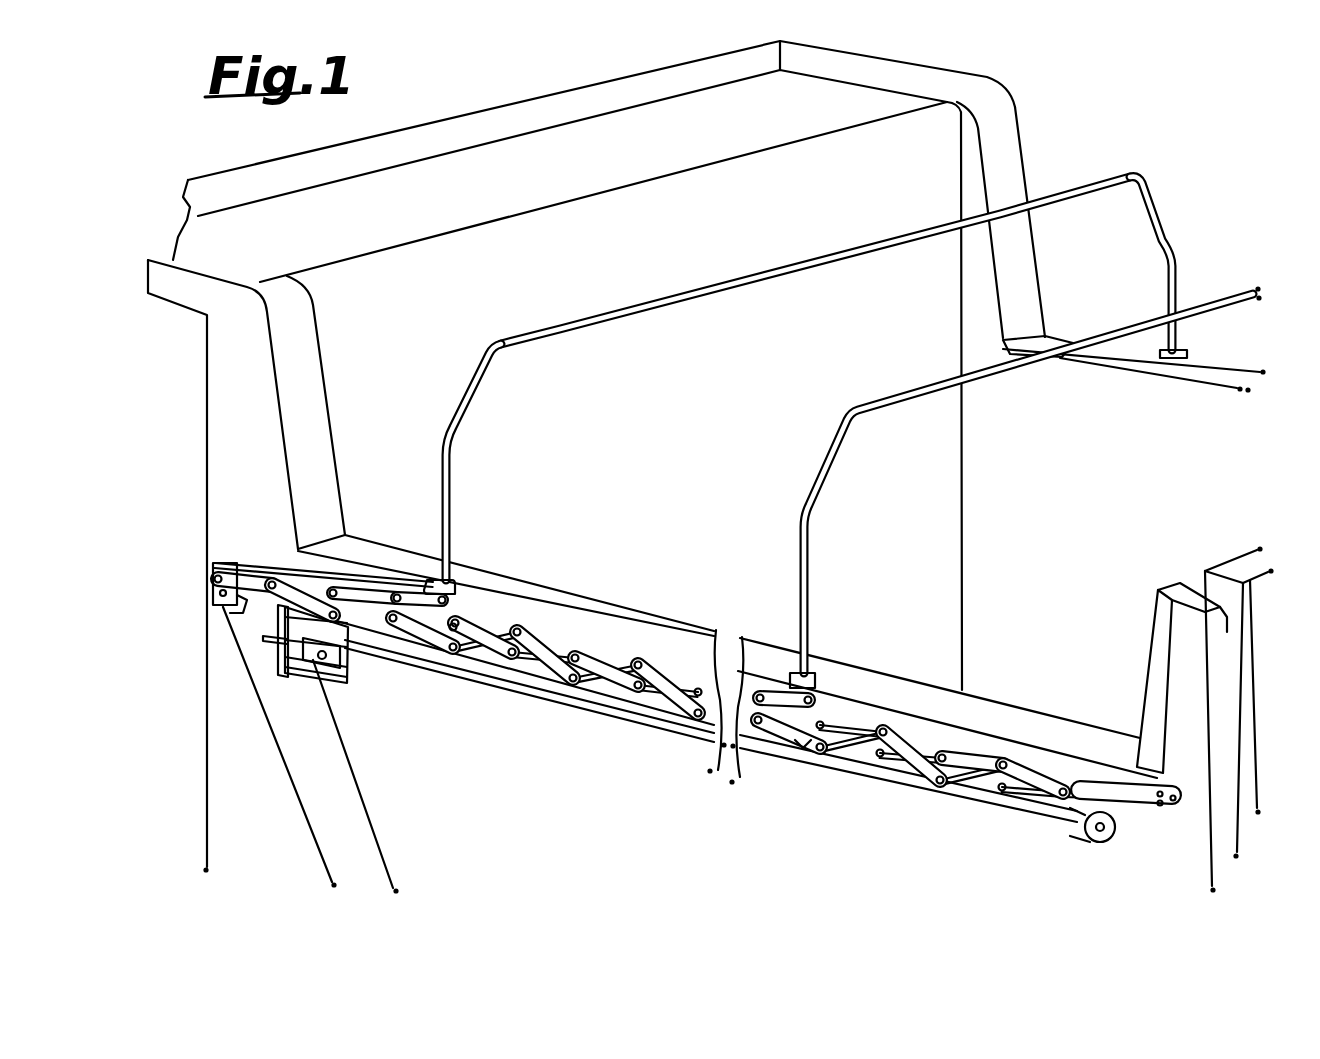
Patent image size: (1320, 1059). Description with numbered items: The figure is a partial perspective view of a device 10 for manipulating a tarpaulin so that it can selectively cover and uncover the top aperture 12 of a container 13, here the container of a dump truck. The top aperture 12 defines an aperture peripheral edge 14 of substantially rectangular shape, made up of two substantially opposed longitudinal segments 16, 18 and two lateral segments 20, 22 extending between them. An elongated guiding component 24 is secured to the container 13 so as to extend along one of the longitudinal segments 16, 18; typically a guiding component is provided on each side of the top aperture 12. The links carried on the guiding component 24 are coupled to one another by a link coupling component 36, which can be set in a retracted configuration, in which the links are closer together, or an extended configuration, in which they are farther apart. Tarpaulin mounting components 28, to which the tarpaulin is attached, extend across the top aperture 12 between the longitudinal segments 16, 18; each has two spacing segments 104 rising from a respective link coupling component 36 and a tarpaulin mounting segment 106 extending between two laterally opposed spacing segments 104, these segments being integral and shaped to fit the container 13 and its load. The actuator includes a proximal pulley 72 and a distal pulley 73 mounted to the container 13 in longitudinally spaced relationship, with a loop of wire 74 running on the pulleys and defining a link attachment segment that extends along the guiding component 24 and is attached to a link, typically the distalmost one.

The device 10 is at (578, 571).
The top aperture 12 is at (722, 442).
The container 13 is at (1143, 418).
The aperture peripheral edge 14 is at (1060, 338).
The longitudinal segment 16 is at (630, 612).
The longitudinal segment 18 is at (1130, 364).
The lateral segment 20 is at (540, 214).
The lateral segment 22 is at (1232, 566).
The guiding component 24 is at (258, 563).
The tarpaulin mounting component 28 is at (879, 244).
The link coupling component 36 is at (803, 745).
The proximal pulley 72 is at (222, 602).
The distal pulley 73 is at (357, 690).
The loop of wire 74 is at (497, 690).
The spacing segment 104 is at (455, 505).
The tarpaulin mounting segment 106 is at (752, 282).